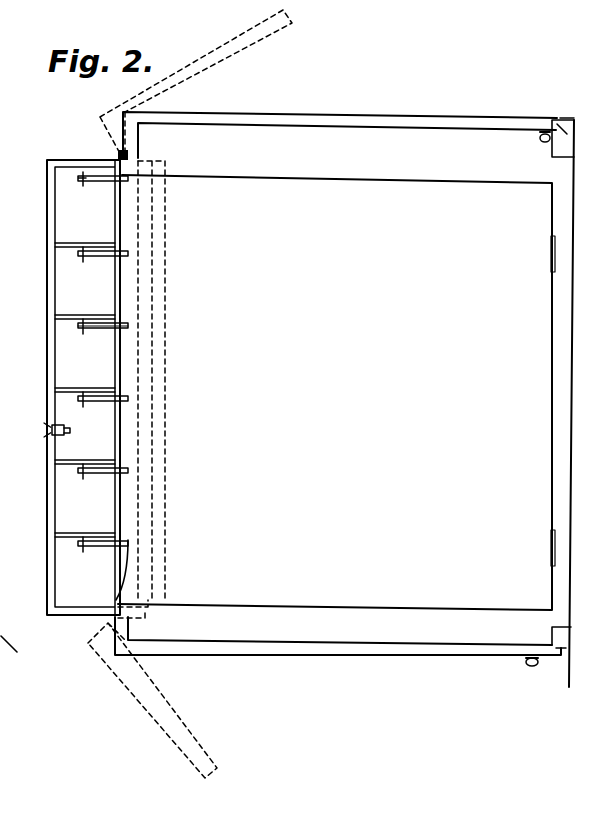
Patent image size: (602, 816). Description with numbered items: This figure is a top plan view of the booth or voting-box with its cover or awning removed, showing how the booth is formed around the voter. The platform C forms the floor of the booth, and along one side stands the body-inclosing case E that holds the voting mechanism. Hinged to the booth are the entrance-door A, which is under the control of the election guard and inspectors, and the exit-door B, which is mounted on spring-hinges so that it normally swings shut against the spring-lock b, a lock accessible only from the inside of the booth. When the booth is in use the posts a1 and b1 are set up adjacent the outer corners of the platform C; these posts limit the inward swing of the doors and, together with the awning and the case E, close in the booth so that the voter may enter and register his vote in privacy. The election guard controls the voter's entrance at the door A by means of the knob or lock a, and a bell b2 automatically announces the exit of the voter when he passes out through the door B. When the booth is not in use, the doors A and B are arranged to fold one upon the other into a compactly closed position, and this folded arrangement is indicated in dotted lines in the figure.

The entrance-door A is at (130, 692).
The exit-door B is at (323, 114).
The platform C is at (287, 403).
The body-inclosing case E is at (46, 380).
The knob or lock a is at (122, 323).
The post a1 is at (562, 652).
The spring-lock b is at (540, 138).
The post b1 is at (567, 135).
The bell b2 is at (574, 116).